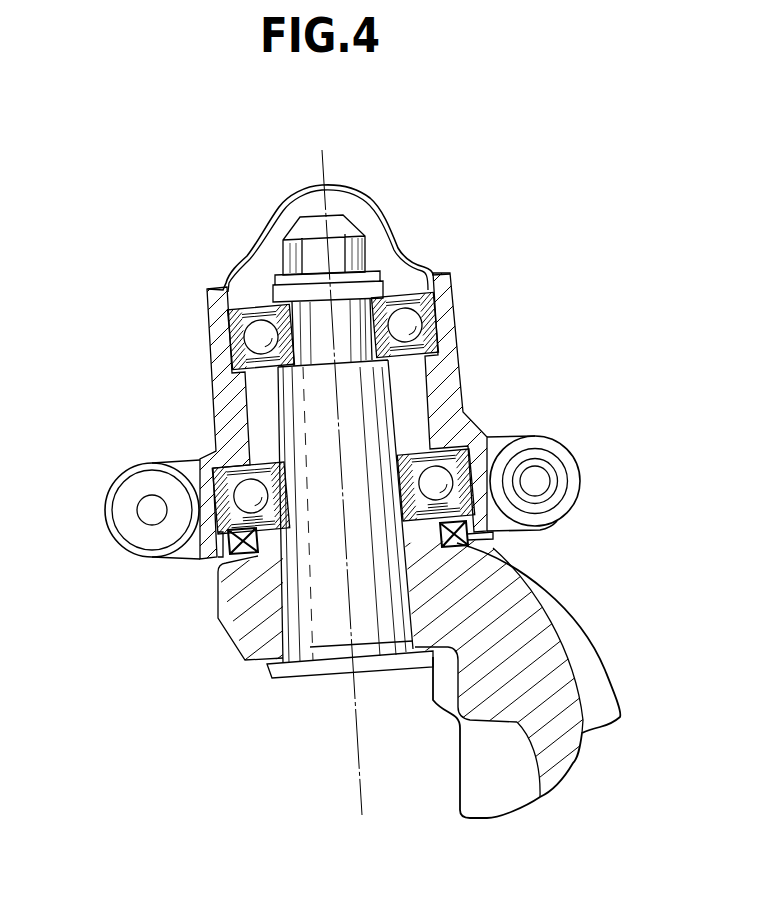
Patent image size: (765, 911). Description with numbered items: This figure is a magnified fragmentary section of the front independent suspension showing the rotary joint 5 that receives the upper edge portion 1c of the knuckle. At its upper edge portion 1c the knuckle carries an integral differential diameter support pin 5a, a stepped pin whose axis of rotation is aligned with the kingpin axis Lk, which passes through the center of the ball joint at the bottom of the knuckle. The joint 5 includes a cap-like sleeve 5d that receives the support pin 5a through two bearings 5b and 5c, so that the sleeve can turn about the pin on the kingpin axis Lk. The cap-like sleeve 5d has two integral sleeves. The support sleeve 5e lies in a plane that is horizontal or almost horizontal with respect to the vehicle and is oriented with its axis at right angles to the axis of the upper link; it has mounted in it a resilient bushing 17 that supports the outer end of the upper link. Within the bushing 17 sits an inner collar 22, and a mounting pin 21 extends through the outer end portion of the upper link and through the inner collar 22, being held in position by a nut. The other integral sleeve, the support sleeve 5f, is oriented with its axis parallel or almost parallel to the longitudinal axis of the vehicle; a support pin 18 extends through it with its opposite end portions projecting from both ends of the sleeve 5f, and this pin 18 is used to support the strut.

The rotary joint 5 is at (444, 251).
The differential diameter support pin 5a is at (300, 602).
The bearing 5b is at (433, 323).
The bearing 5c is at (233, 337).
The cap-like sleeve 5d is at (450, 387).
The support sleeve 5e is at (548, 523).
The support sleeve 5f is at (160, 462).
The resilient bushing 17 is at (565, 470).
The support pin 18 is at (127, 497).
The mounting pin 21 is at (538, 482).
The inner collar 22 is at (540, 462).
The upper edge portion 1c is at (592, 640).
The kingpin axis Lk is at (355, 742).